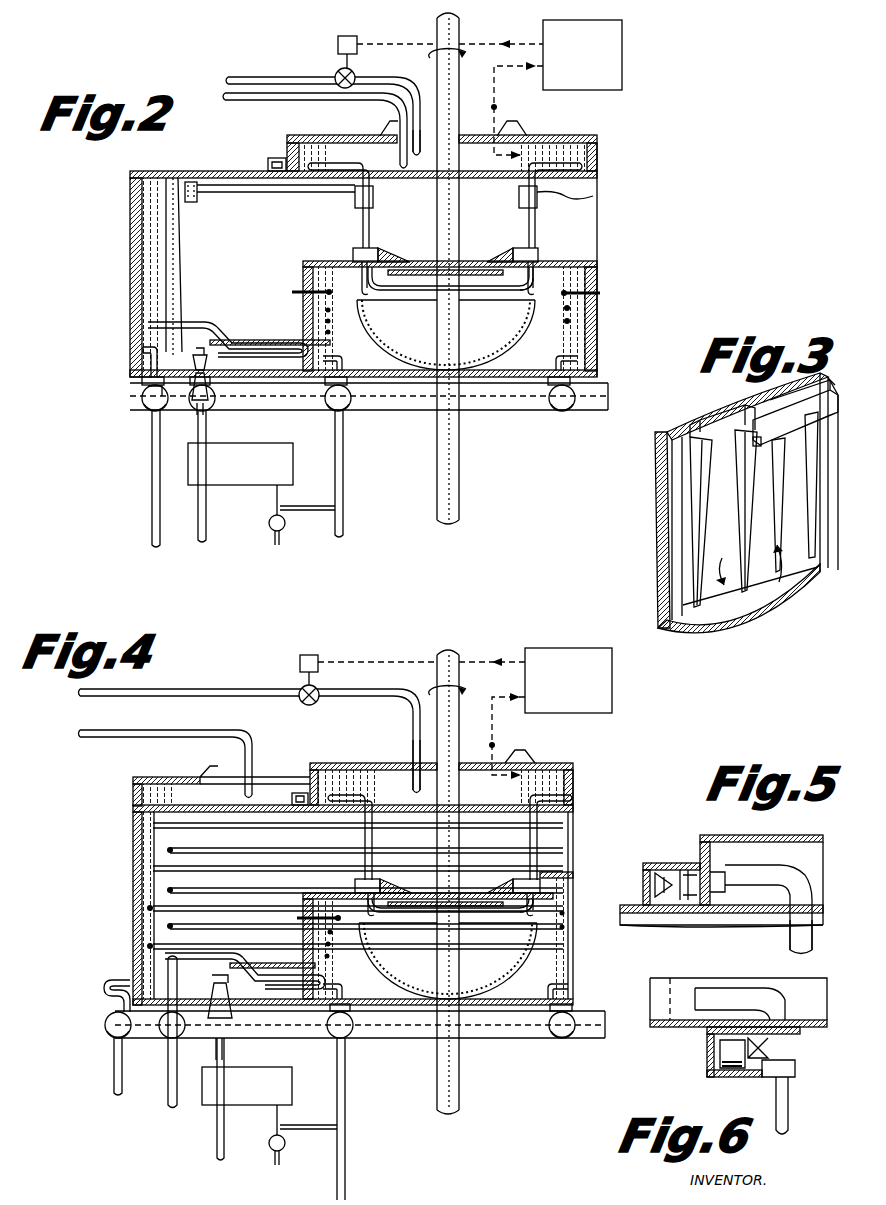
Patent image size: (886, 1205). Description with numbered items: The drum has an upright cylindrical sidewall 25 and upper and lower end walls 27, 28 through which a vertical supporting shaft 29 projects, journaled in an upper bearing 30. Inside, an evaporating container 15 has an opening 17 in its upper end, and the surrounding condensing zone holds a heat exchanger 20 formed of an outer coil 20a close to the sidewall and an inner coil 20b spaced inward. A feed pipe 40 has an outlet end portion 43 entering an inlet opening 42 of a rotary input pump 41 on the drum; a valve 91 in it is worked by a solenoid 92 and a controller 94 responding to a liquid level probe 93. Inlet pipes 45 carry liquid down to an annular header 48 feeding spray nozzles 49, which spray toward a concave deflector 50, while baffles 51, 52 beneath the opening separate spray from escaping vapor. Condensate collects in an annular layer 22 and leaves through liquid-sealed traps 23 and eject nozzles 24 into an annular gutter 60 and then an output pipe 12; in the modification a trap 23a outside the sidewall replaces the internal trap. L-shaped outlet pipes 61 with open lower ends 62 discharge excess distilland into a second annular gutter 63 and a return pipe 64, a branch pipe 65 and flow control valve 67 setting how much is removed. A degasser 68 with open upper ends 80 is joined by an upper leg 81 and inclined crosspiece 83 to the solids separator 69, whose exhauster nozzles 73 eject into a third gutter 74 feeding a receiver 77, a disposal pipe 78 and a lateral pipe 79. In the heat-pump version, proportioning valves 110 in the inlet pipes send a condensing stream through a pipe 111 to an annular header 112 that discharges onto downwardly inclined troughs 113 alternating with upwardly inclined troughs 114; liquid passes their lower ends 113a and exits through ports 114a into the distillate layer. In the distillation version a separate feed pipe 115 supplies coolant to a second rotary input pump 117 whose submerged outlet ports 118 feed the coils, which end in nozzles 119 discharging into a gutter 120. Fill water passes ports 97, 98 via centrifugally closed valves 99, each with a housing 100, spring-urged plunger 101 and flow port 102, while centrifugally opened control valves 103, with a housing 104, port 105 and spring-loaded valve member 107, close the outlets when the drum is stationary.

In FIG. 2, the output pipe 12 is at (150, 512).
In FIG. 4, the output pipe 12 is at (112, 1070).
In FIG. 2, the evaporating container 15 is at (550, 261).
In FIG. 2, the opening 17 is at (496, 248).
In FIG. 4, the opening 17 is at (500, 876).
In FIG. 4, the heat exchanger 20 is at (150, 866).
In FIG. 4, the outer coil 20a is at (170, 910).
In FIG. 4, the inner coil 20b is at (150, 946).
In FIG. 2, the annular layer 22 is at (148, 255).
In FIG. 4, the annular layer 22 is at (138, 828).
In FIG. 2, the liquid-sealed trap 23 is at (143, 350).
In FIG. 6, the liquid-sealed trap 23 is at (770, 985).
In FIG. 4, the trap 23a is at (106, 982).
In FIG. 2, the eject nozzle 24 is at (143, 396).
In FIG. 4, the eject nozzle 24 is at (105, 1024).
In FIG. 6, the eject nozzle 24 is at (790, 1095).
In FIG. 2, the cylindrical sidewall 25 is at (130, 300).
In FIG. 2, the upper end wall 27 is at (222, 158).
In FIG. 4, the upper end wall 27 is at (353, 808).
In FIG. 5, the upper end wall 27 is at (700, 914).
In FIG. 2, the lower end wall 28 is at (418, 410).
In FIG. 4, the lower end wall 28 is at (405, 1010).
In FIG. 2, the supporting shaft 29 is at (460, 200).
In FIG. 4, the supporting shaft 29 is at (462, 947).
In FIG. 2, the bearing 30 is at (255, 100).
In FIG. 2, the feed pipe 40 is at (262, 76).
In FIG. 4, the feed pipe 40 is at (185, 688).
In FIG. 2, the rotary input pump 41 is at (540, 136).
In FIG. 4, the rotary input pump 41 is at (555, 765).
In FIG. 5, the rotary input pump 41 is at (716, 838).
In FIG. 2, the inlet opening 42 is at (500, 122).
In FIG. 4, the inlet opening 42 is at (508, 752).
In FIG. 2, the outlet end portion 43 is at (422, 150).
In FIG. 4, the outlet end portion 43 is at (412, 735).
In FIG. 2, the inlet pipes 45 is at (370, 230).
In FIG. 4, the inlet pipes 45 is at (375, 825).
In FIG. 5, the inlet pipes 45 is at (790, 940).
In FIG. 2, the annular header 48 is at (352, 248).
In FIG. 4, the annular header 48 is at (364, 895).
In FIG. 2, the spray nozzle 49 is at (530, 276).
In FIG. 4, the spray nozzle 49 is at (522, 912).
In FIG. 2, the deflector 50 is at (518, 326).
In FIG. 4, the deflector 50 is at (505, 975).
In FIG. 2, the baffle 51 is at (398, 272).
In FIG. 4, the baffle 51 is at (398, 905).
In FIG. 2, the baffle 52 is at (515, 292).
In FIG. 4, the baffle 52 is at (522, 915).
In FIG. 2, the annular gutter 60 is at (145, 410).
In FIG. 4, the annular gutter 60 is at (106, 1033).
In FIG. 2, the L-shaped outlet pipes 61 is at (344, 354).
In FIG. 4, the L-shaped outlet pipes 61 is at (344, 982).
In FIG. 2, the open lower end 62 is at (346, 410).
In FIG. 4, the open lower end 62 is at (348, 1036).
In FIG. 2, the second annular gutter 63 is at (330, 410).
In FIG. 4, the second annular gutter 63 is at (570, 1036).
In FIG. 2, the return pipe 64 is at (344, 482).
In FIG. 4, the return pipe 64 is at (346, 1112).
In FIG. 2, the branch pipe 65 is at (268, 522).
In FIG. 4, the branch pipe 65 is at (286, 1142).
In FIG. 2, the flow control valve 67 is at (274, 532).
In FIG. 4, the flow control valve 67 is at (274, 1158).
In FIG. 2, the degasser 68 is at (575, 320).
In FIG. 2, the separator 69 is at (200, 350).
In FIG. 2, the exhauster nozzle 73 is at (212, 396).
In FIG. 4, the exhauster nozzle 73 is at (232, 1022).
In FIG. 2, the third gutter 74 is at (212, 414).
In FIG. 4, the third gutter 74 is at (226, 1045).
In FIG. 2, the receiver 77 is at (230, 486).
In FIG. 4, the receiver 77 is at (240, 1106).
In FIG. 2, the pipe 78 is at (197, 530).
In FIG. 4, the pipe 78 is at (217, 1135).
In FIG. 2, the lateral pipe 79 is at (286, 506).
In FIG. 4, the lateral pipe 79 is at (292, 1126).
In FIG. 2, the open upper end 80 is at (300, 288).
In FIG. 4, the open upper end 80 is at (345, 928).
In FIG. 2, the upper leg 81 is at (195, 322).
In FIG. 4, the upper leg 81 is at (228, 953).
In FIG. 2, the crosspiece 83 is at (230, 340).
In FIG. 2, the valve 91 is at (356, 72).
In FIG. 4, the valve 91 is at (316, 704).
In FIG. 2, the solenoid 92 is at (358, 40).
In FIG. 4, the solenoid 92 is at (320, 658).
In FIG. 2, the liquid level probe 93 is at (492, 140).
In FIG. 4, the liquid level probe 93 is at (505, 772).
In FIG. 2, the controller 94 is at (623, 44).
In FIG. 4, the controller 94 is at (613, 688).
In FIG. 5, the port 97 is at (722, 872).
In FIG. 5, the port 98 is at (662, 916).
In FIG. 2, the valve 99 is at (276, 156).
In FIG. 4, the valve 99 is at (292, 796).
In FIG. 5, the valve 99 is at (680, 828).
In FIG. 5, the hollow housing 100 is at (650, 862).
In FIG. 5, the valve-closing plunger 101 is at (690, 852).
In FIG. 5, the flow port 102 is at (660, 883).
In FIG. 2, the control valves 103 is at (142, 380).
In FIG. 4, the control valves 103 is at (338, 1018).
In FIG. 6, the control valves 103 is at (694, 1046).
In FIG. 6, the housing 104 is at (740, 1075).
In FIG. 6, the port 105 is at (775, 1050).
In FIG. 6, the spring-loaded valve member 107 is at (732, 1072).
In FIG. 2, the proportioning valves 110 is at (374, 196).
In FIG. 2, the pipe 111 is at (282, 193).
In FIG. 2, the annular header 112 is at (190, 204).
In FIG. 3, the annular header 112 is at (798, 440).
In FIG. 2, the troughs 113 is at (178, 262).
In FIG. 3, the troughs 113 is at (760, 524).
In FIG. 3, the lower ends 113a is at (704, 602).
In FIG. 2, the troughs 114 is at (182, 238).
In FIG. 3, the troughs 114 is at (724, 505).
In FIG. 3, the ports 114a is at (790, 398).
In FIG. 4, the feed pipe 115 is at (125, 730).
In FIG. 4, the second rotary input pump 117 is at (130, 786).
In FIG. 4, the outlet ports 118 is at (145, 814).
In FIG. 4, the nozzles 119 is at (165, 1046).
In FIG. 4, the gutter 120 is at (178, 1038).